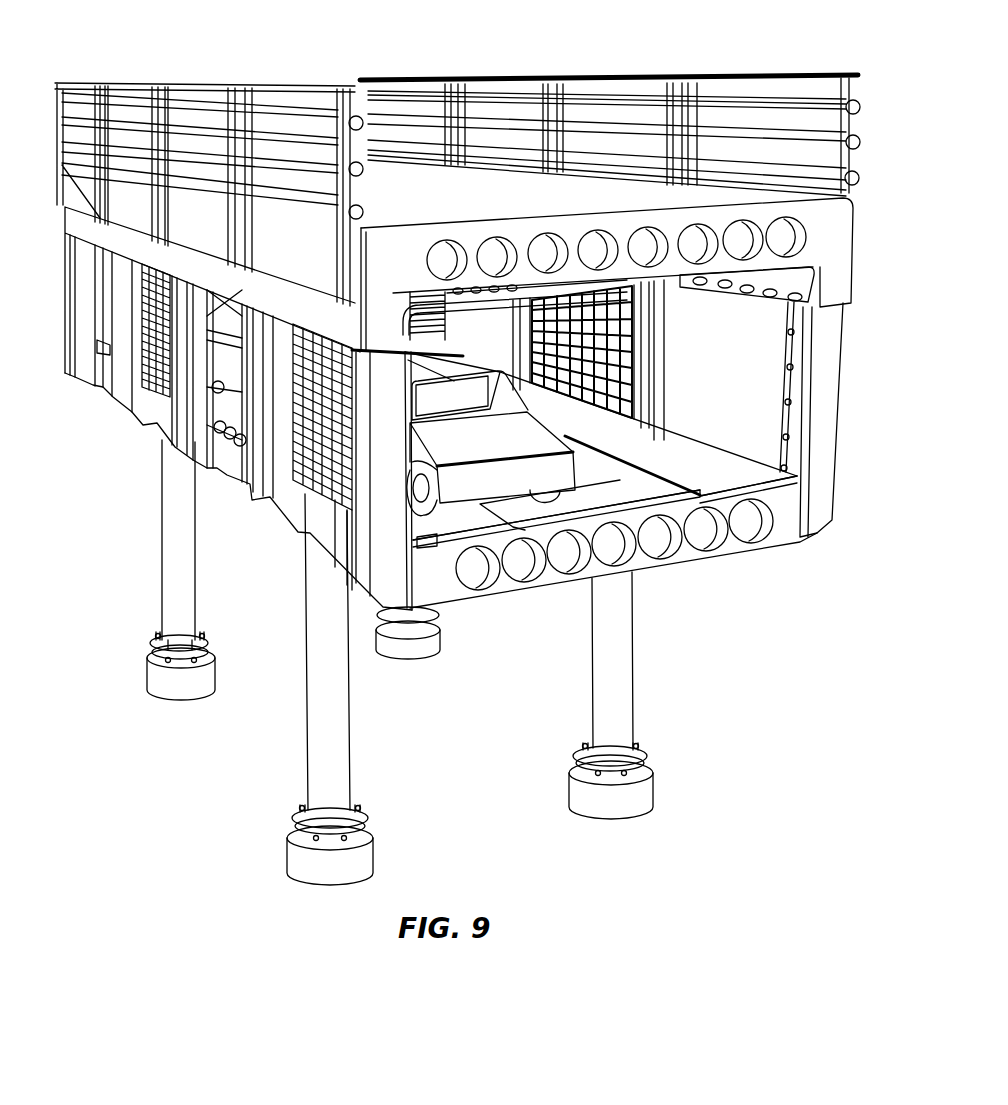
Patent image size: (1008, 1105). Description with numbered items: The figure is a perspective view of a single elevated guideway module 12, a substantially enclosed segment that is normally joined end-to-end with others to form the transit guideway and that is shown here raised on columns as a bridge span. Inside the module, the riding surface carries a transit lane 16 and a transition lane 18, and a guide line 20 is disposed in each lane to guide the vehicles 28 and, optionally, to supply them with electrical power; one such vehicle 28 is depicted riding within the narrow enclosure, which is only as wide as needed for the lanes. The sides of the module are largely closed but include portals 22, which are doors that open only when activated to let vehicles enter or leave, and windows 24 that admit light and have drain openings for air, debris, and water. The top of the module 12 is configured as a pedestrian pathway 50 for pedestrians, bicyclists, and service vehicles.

The guideway module 12 is at (114, 427).
The transit lane 16 is at (553, 510).
The transition lane 18 is at (724, 479).
The guide line 20 is at (627, 455).
The portal 22 is at (627, 331).
The window 24 is at (750, 377).
The vehicle 28 is at (530, 440).
The pedestrian pathway 50 is at (467, 187).